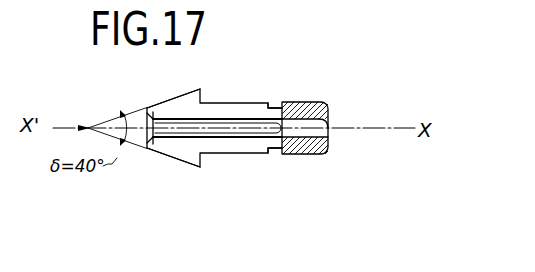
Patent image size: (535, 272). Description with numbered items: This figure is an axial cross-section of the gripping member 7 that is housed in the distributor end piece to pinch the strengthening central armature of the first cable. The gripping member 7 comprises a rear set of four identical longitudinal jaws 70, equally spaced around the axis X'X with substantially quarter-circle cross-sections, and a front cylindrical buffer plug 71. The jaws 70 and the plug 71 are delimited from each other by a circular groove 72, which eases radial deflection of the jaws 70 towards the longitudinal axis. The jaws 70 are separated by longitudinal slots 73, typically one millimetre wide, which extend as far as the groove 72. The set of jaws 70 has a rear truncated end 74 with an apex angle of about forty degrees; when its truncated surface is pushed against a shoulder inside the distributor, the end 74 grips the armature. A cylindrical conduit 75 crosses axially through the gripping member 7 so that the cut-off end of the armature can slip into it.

The gripping member 7 is at (303, 76).
The longitudinal jaws 70 is at (220, 150).
The cylindrical buffer plug 71 is at (311, 149).
The circular groove 72 is at (276, 156).
The longitudinal slots 73 is at (176, 132).
The rear truncated end 74 is at (178, 97).
The cylindrical conduit 75 is at (331, 125).